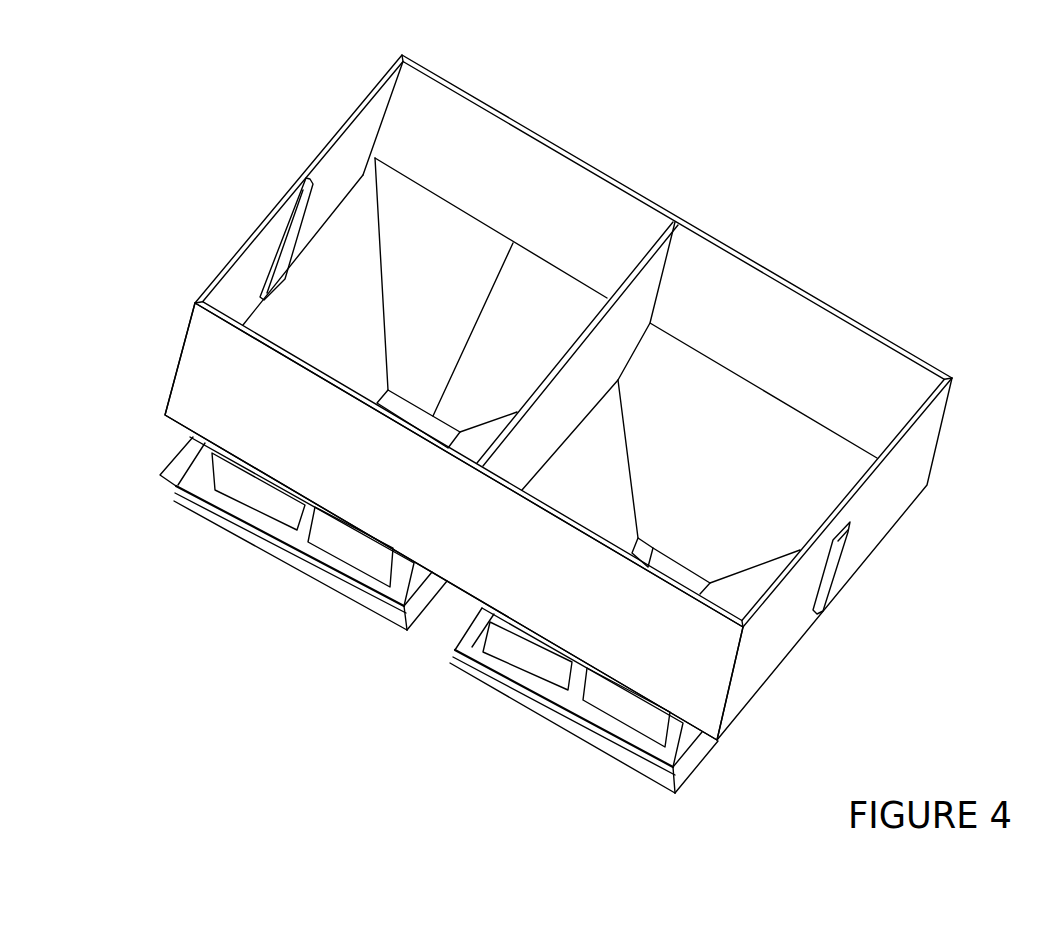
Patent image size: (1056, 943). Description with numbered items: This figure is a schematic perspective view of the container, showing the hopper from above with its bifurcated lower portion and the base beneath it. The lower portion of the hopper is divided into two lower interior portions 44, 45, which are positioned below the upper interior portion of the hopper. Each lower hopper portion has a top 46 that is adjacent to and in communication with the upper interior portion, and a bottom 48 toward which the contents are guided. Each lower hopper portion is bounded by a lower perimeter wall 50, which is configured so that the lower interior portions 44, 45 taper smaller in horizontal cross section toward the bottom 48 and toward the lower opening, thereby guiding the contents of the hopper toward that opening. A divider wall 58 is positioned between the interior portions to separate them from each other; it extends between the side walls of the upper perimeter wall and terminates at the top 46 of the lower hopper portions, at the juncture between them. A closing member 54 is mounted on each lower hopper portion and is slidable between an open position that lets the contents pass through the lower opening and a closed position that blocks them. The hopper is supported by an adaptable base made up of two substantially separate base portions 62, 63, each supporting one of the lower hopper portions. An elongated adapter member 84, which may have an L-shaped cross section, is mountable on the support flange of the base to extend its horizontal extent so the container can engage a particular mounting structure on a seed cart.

The lower interior portion 44 is at (441, 322).
The lower interior portion 45 is at (708, 446).
The top 46 is at (533, 248).
The bottom 48 is at (513, 243).
The lower perimeter wall 50 is at (682, 393).
The closing member 54 is at (682, 583).
The divider wall 58 is at (645, 280).
The base portion 62 is at (258, 562).
The base portion 63 is at (475, 695).
The adapter member 84 is at (180, 462).